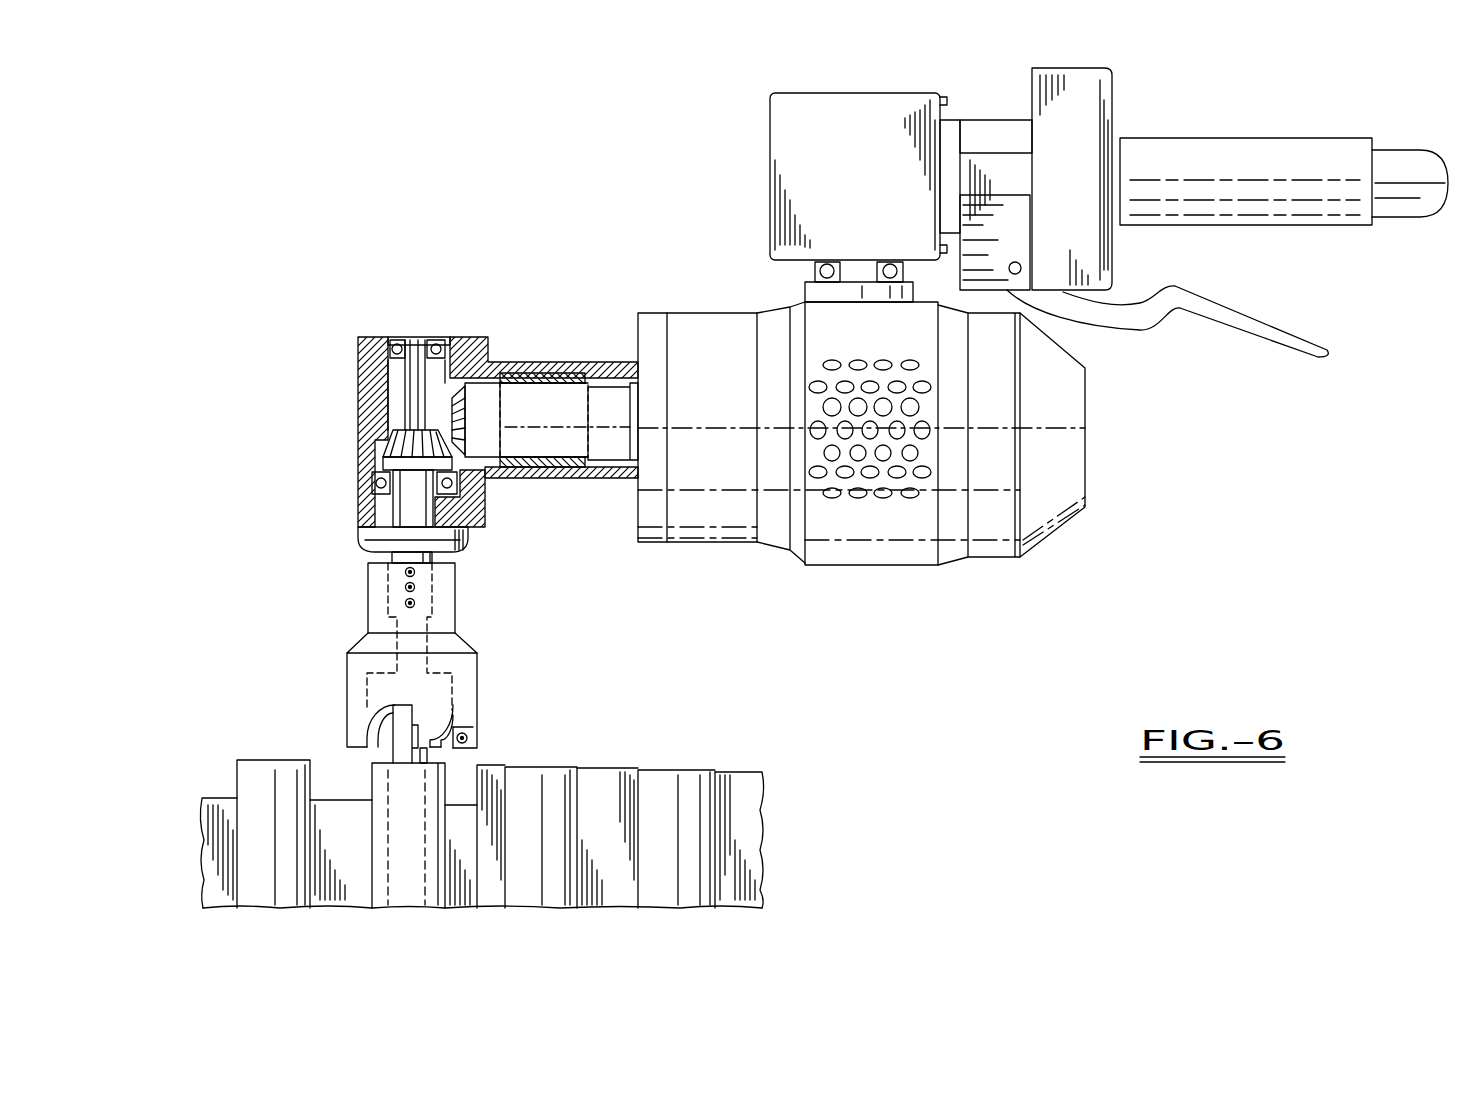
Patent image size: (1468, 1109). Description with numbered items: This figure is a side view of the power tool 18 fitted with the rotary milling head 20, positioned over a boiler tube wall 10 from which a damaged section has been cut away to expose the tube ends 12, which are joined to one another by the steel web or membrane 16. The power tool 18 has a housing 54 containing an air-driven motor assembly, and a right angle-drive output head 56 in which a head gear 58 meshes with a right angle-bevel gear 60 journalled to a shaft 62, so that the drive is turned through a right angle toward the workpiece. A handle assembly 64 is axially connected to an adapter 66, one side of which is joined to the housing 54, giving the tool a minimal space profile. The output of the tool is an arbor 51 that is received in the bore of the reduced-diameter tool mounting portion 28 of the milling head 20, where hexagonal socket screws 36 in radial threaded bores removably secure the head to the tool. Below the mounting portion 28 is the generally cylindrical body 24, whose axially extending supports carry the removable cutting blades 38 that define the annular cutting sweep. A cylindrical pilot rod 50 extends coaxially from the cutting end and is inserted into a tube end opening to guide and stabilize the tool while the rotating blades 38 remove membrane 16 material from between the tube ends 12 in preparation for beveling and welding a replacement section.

The boiler tube wall 10 is at (510, 799).
The tube ends 12 is at (258, 760).
The web or membrane 16 is at (215, 798).
The power tool 18 is at (861, 493).
The rotary milling head 20 is at (431, 690).
The cylindrical body 24 is at (347, 668).
The tool mounting portion 28 is at (368, 575).
The hexagonal socket screws 36 is at (407, 587).
The cutting blade 38 is at (345, 730).
The pilot rod 50 is at (393, 748).
The arbor 51 is at (437, 557).
The housing 54 is at (823, 562).
The right angle-drive output head 56 is at (403, 328).
The head gear 58 is at (452, 383).
The right angle-bevel gear 60 is at (387, 447).
The shaft 62 is at (410, 395).
The handle assembly 64 is at (1272, 138).
The adapter 66 is at (770, 145).